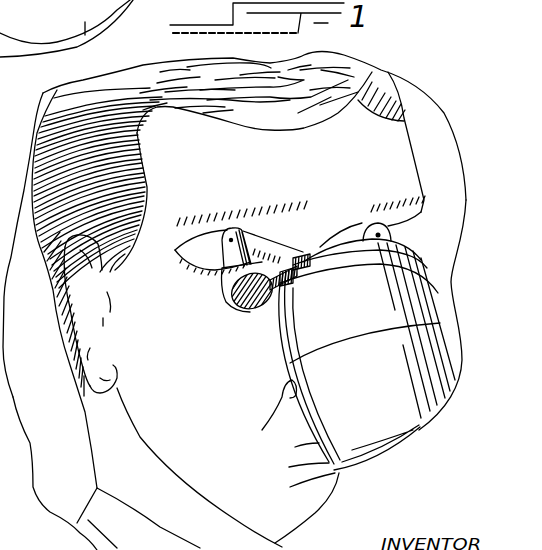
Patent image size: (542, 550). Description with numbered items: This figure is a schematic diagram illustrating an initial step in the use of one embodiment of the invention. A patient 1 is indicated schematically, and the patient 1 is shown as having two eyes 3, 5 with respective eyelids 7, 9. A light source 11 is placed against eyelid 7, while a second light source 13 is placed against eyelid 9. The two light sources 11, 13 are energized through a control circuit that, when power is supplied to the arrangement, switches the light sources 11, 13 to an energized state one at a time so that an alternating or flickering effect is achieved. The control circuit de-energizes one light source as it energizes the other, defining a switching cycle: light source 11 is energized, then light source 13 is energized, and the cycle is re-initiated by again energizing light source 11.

The patient 1 is at (422, 160).
The eye 3 is at (420, 240).
The eye 5 is at (172, 256).
The eyelid 7 is at (390, 240).
The eyelid 9 is at (200, 248).
The light source 11 is at (357, 228).
The light source 13 is at (272, 232).